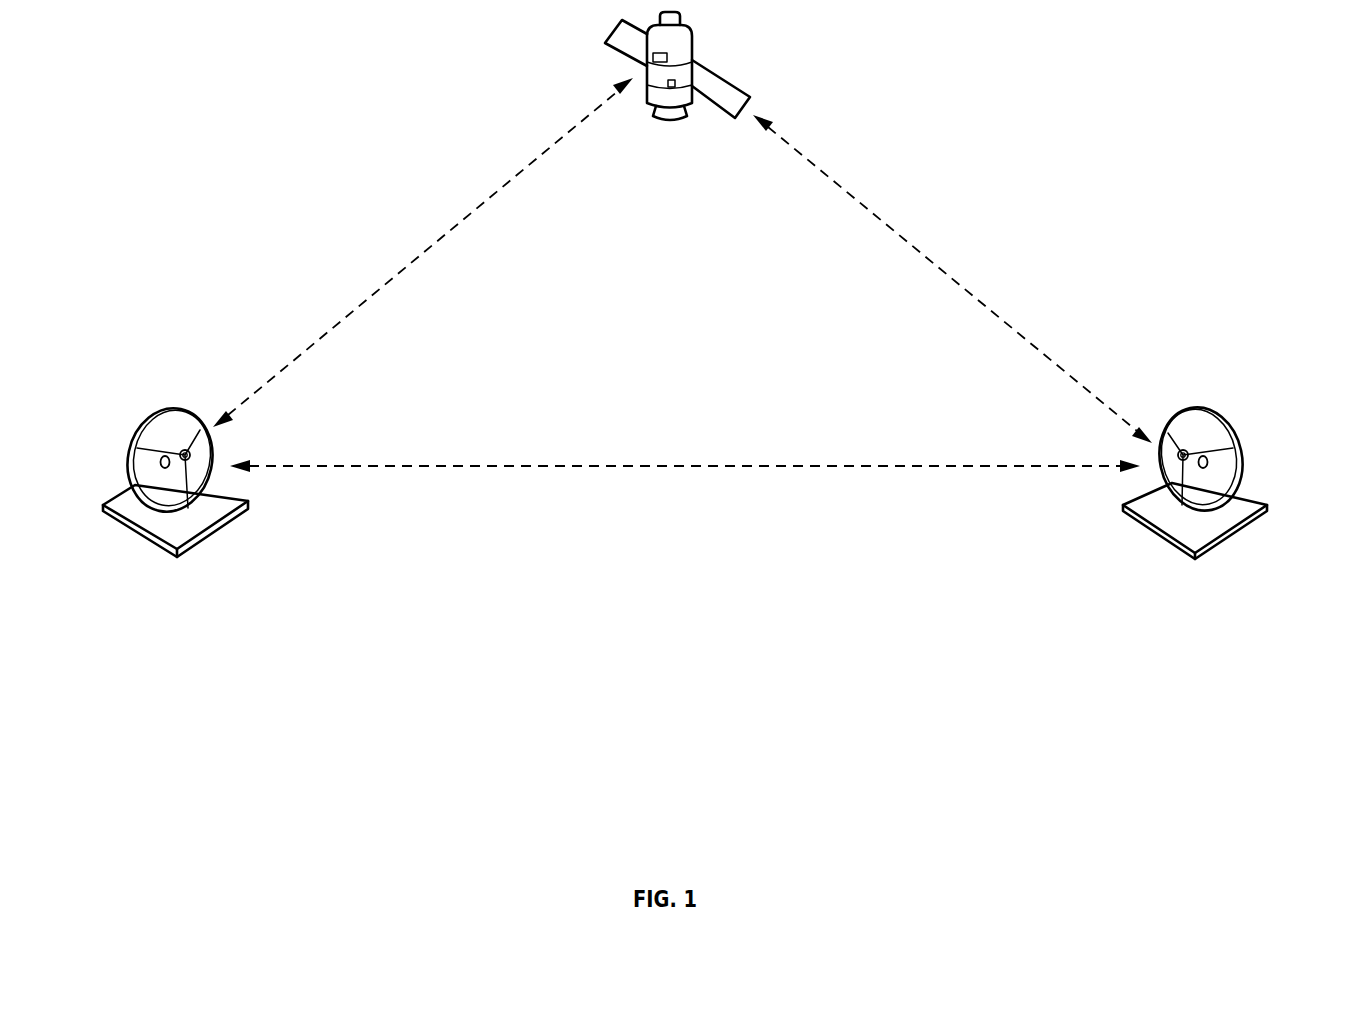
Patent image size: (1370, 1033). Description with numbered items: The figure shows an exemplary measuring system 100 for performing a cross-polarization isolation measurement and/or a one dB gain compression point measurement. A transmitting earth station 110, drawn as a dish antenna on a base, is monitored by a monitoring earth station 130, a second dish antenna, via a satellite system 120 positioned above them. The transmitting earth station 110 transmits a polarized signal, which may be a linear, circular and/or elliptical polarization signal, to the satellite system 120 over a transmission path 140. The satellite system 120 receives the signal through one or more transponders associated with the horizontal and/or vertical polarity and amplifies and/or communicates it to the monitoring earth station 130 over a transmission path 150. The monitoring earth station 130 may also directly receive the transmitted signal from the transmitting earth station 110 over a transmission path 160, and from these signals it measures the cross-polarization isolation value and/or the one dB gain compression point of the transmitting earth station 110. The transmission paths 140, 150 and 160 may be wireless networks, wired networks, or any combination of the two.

The measuring system 100 is at (242, 49).
The transmitting earth station 110 is at (200, 542).
The satellite system 120 is at (670, 123).
The monitoring earth station 130 is at (1170, 545).
The transmission path 140 is at (437, 247).
The transmission path 150 is at (902, 243).
The transmission path 160 is at (665, 466).